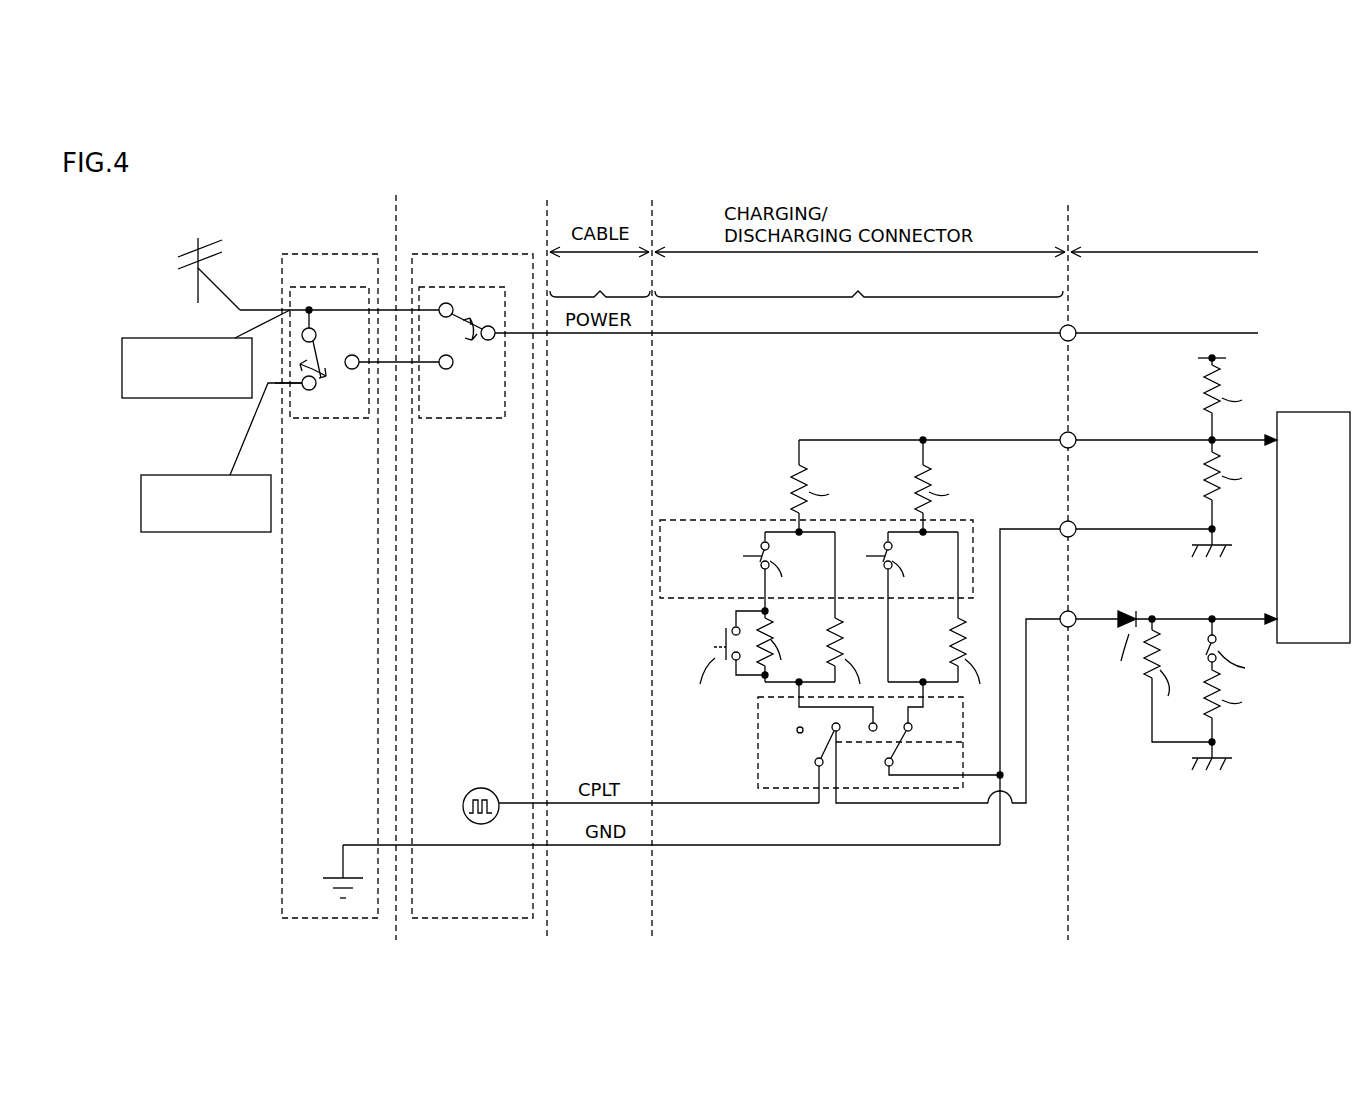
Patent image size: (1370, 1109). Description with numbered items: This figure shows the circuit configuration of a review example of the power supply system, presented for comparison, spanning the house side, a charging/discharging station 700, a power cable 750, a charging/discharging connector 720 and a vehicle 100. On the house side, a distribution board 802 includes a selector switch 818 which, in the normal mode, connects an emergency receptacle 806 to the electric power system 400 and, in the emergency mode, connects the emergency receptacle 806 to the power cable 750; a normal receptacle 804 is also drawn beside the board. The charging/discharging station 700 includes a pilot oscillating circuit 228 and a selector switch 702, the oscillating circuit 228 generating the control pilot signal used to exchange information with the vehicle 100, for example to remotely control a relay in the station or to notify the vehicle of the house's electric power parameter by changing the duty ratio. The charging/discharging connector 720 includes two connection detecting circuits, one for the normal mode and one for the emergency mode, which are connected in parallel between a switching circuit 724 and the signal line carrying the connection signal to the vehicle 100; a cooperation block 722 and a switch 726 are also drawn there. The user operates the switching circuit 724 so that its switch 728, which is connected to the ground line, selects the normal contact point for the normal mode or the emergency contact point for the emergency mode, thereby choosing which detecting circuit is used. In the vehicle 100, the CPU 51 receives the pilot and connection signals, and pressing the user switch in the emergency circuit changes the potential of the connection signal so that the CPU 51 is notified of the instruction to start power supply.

The vehicle 100 is at (1294, 221).
The electric power system 400 is at (204, 240).
The normal receptacle 804 is at (166, 337).
The emergency receptacle 806 is at (185, 474).
The distribution board 802 is at (374, 252).
The selector switch 818 is at (334, 420).
The charging/discharging station 700 is at (527, 252).
The selector switch 702 is at (469, 420).
The CPLT oscillating circuit 228 is at (482, 788).
The power cable 750 is at (600, 282).
The charging/discharging connector 720 is at (859, 556).
The cooperation switch unit 722 is at (712, 520).
The switching circuit 724 is at (850, 742).
The CPLT switch 726 is at (814, 752).
The switch 728 is at (896, 752).
The CPU 51 is at (1323, 412).